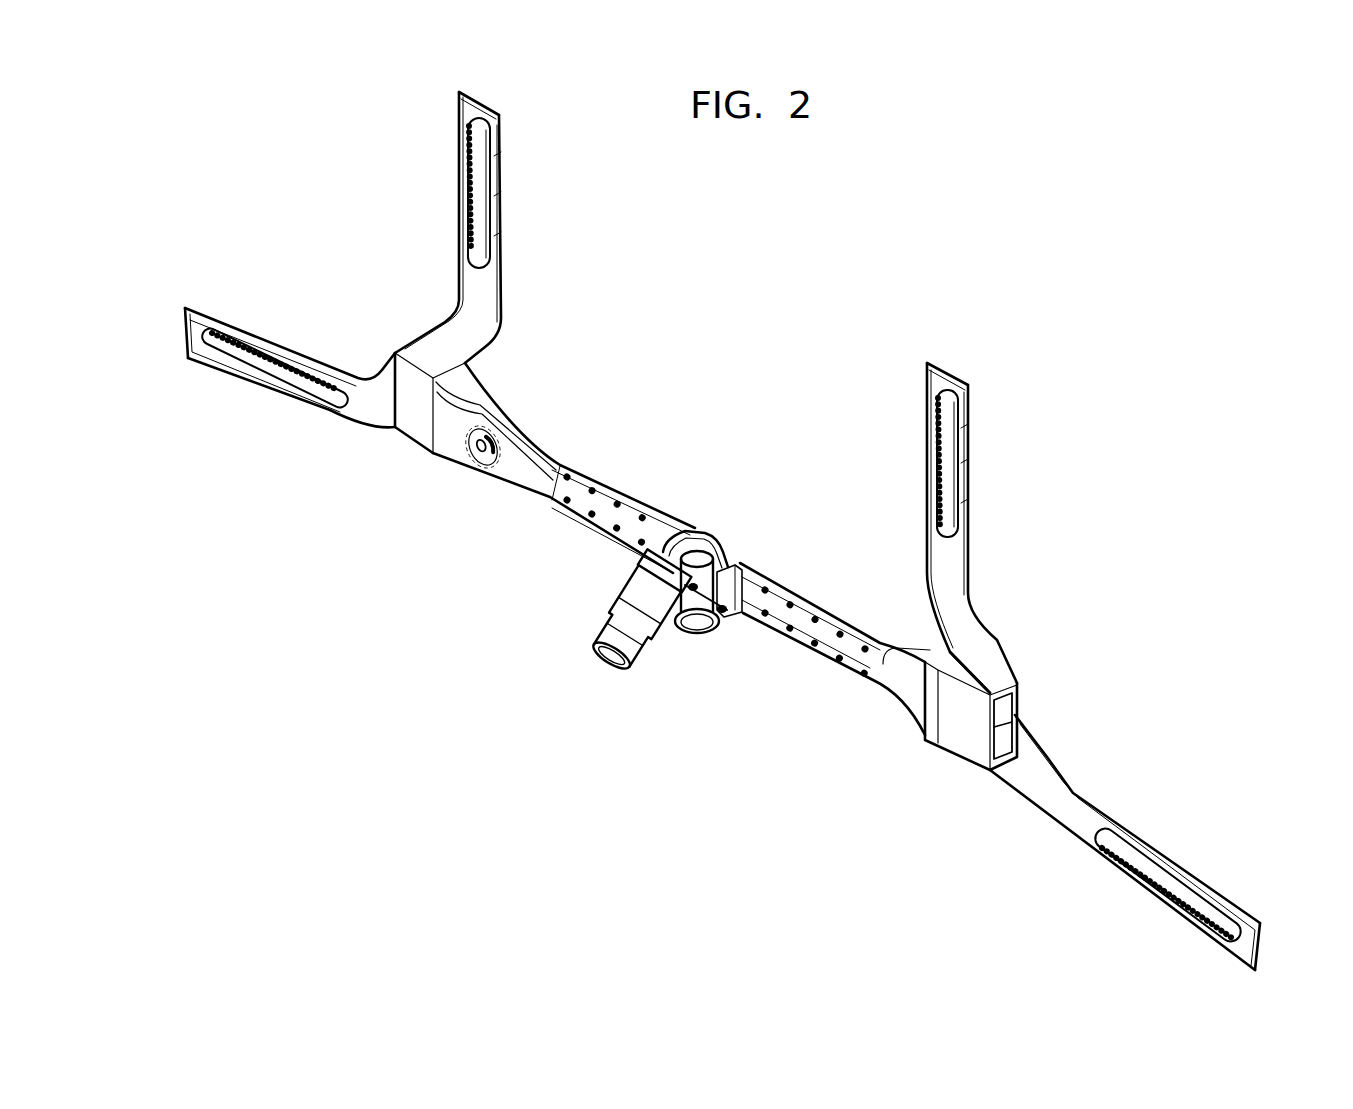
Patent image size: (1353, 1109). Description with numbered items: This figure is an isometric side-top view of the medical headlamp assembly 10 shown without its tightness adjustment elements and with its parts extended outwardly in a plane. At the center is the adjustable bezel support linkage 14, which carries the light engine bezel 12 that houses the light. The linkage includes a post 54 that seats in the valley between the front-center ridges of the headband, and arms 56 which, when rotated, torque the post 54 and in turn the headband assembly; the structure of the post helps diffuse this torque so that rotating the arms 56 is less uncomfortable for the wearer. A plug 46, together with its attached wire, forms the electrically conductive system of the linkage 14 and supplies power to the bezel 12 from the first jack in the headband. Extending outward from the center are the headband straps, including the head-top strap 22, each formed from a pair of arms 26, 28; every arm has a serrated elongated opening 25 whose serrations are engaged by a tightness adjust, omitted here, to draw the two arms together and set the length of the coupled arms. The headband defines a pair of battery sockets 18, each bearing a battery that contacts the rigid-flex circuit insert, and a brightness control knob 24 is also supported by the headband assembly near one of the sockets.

The medical headlamp assembly 10 is at (770, 245).
The light engine bezel 12 is at (666, 680).
The adjustable bezel support linkage 14 is at (758, 637).
The battery socket 18 is at (432, 355).
The head-top strap 22 is at (500, 217).
The brightness control knob 24 is at (484, 452).
The serrated elongated opening 25 is at (473, 175).
The arm 26 is at (482, 102).
The arm 28 is at (187, 337).
The plug 46 is at (727, 567).
The post 54 is at (695, 540).
The arms 56 is at (727, 597).